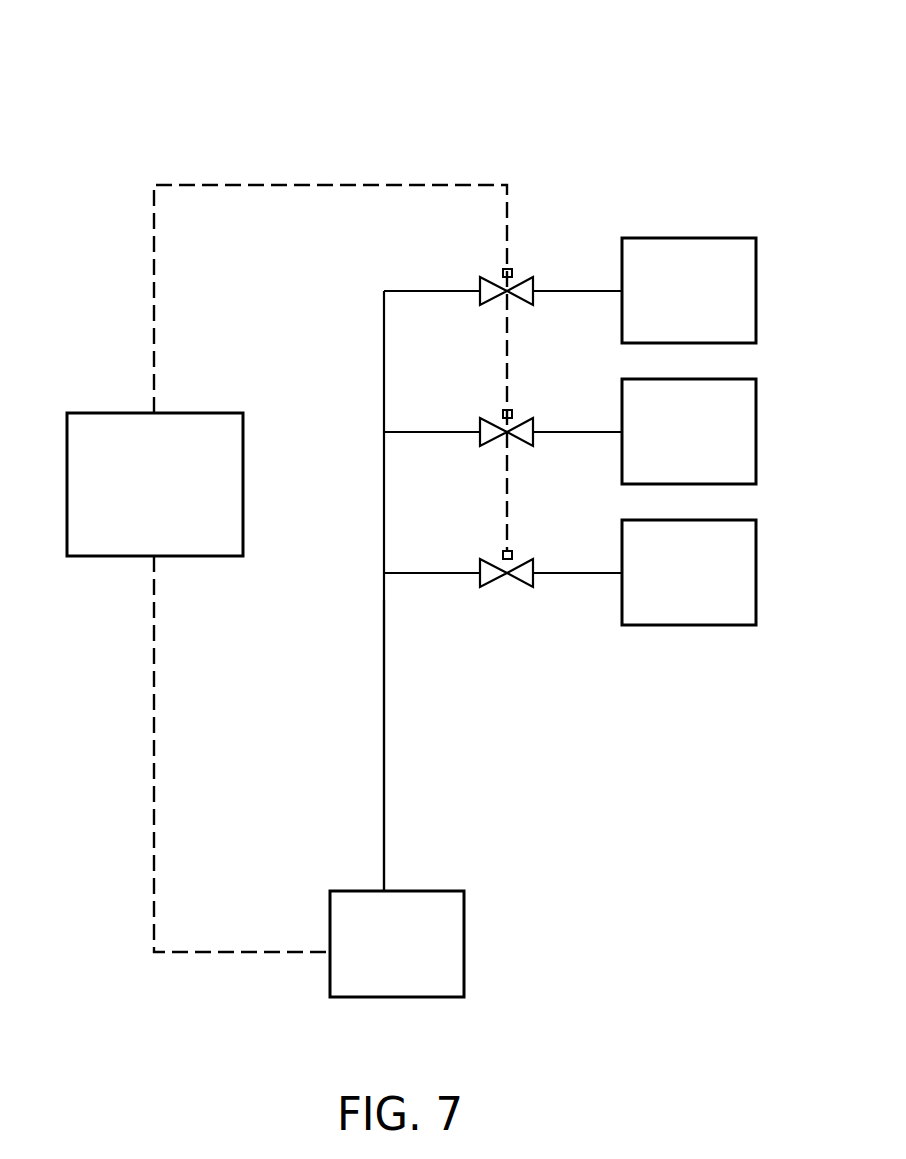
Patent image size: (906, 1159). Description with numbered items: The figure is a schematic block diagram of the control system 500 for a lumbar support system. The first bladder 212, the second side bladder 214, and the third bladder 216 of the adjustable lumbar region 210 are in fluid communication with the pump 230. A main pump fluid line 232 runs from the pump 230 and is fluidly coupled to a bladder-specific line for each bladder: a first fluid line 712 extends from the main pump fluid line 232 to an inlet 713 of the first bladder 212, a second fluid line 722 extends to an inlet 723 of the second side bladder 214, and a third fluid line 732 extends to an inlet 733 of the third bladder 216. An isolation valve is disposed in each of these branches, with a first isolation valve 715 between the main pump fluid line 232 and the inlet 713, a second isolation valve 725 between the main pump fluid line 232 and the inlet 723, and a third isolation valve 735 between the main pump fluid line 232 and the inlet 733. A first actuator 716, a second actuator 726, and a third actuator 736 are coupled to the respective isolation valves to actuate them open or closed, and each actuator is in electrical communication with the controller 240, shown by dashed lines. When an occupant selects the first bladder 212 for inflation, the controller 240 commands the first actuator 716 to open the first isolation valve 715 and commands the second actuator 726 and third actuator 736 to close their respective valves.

The control system 500 is at (550, 108).
The adjustable lumbar region 210 is at (689, 330).
The first bladder 212 is at (671, 329).
The second side bladder 214 is at (671, 470).
The third bladder 216 is at (671, 611).
The pump 230 is at (379, 967).
The main pump fluid line 232 is at (384, 787).
The controller 240 is at (137, 509).
The first fluid line 712 is at (421, 292).
The inlet of first bladder 713 is at (620, 293).
The first isolation valve 715 is at (528, 293).
The first actuator 716 is at (503, 272).
The second fluid line 722 is at (416, 433).
The inlet of second bladder 723 is at (620, 434).
The second isolation valve 725 is at (528, 434).
The second actuator 726 is at (503, 413).
The third fluid line 732 is at (416, 574).
The inlet of third bladder 733 is at (620, 575).
The third isolation valve 735 is at (528, 575).
The third actuator 736 is at (503, 554).